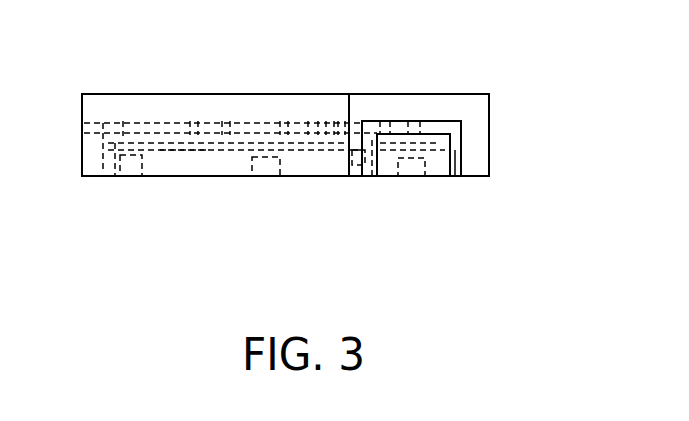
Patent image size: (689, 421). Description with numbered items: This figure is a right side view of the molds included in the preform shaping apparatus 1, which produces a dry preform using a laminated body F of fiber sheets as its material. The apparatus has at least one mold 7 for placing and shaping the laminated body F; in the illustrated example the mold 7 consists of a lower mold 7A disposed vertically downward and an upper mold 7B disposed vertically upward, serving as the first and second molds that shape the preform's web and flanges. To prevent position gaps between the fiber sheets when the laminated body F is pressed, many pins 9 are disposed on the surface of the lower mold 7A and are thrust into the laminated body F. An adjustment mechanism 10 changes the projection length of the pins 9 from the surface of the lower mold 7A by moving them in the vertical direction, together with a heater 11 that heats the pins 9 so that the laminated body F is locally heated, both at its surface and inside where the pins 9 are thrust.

The preform shaping apparatus 1 is at (72, 56).
The mold 7 is at (488, 131).
The lower mold 7A is at (447, 142).
The upper mold 7B is at (473, 128).
The pins 9 is at (195, 148).
The adjustment mechanism 10 is at (266, 170).
The heater 11 is at (174, 148).
The laminated body of fiber sheets F is at (455, 162).